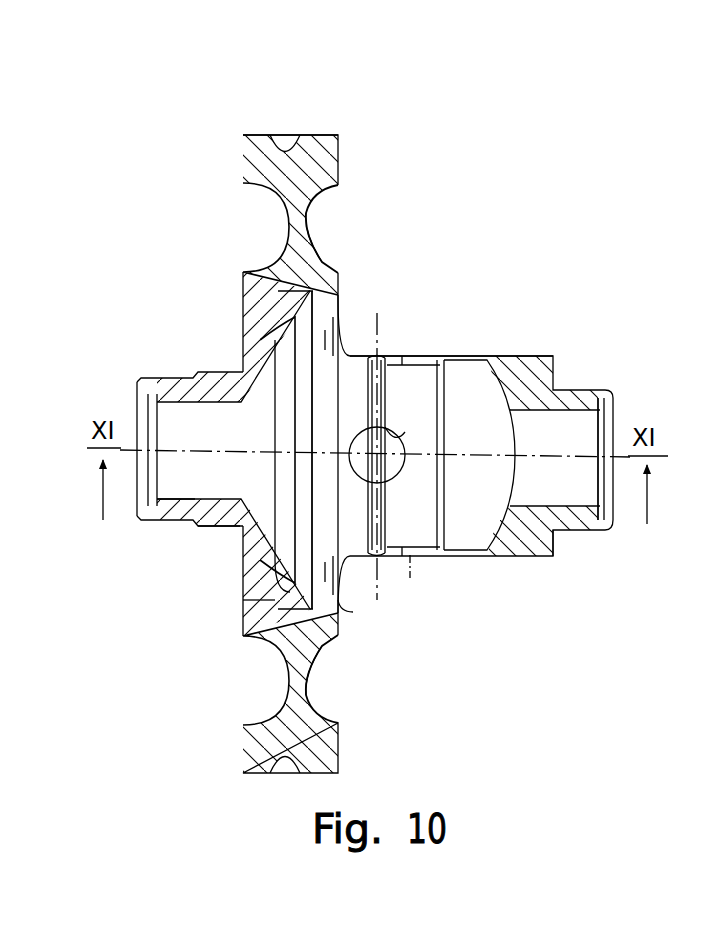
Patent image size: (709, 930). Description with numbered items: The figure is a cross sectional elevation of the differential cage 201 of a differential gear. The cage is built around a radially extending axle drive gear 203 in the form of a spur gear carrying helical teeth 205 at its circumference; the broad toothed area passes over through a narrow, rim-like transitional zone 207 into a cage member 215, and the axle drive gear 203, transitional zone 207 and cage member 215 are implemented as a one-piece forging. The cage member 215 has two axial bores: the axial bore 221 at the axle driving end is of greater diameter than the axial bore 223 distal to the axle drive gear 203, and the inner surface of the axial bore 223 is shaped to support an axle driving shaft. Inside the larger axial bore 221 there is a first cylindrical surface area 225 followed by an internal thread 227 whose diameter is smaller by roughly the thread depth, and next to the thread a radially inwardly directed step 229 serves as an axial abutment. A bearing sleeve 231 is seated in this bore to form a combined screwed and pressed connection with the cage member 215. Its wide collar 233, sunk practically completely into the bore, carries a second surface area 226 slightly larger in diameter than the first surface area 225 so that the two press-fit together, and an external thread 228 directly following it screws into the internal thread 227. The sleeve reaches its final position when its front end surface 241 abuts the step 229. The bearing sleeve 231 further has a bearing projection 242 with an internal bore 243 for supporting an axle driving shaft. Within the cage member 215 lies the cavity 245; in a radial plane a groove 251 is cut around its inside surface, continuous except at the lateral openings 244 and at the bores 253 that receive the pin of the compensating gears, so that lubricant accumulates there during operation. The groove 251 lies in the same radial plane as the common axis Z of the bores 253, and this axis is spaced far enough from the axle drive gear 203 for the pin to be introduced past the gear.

The differential cage 201 is at (440, 258).
The axle drive gear 203 is at (243, 212).
The helical teeth 205 is at (296, 137).
The transitional zone 207 is at (297, 222).
The cage member 215 is at (523, 373).
The axial bore 221 is at (243, 307).
The axial bore 223 is at (582, 418).
The first cylindrical surface area 225 is at (245, 600).
The second surface area 226 is at (248, 640).
The internal thread 227 is at (353, 612).
The external thread 228 is at (250, 690).
The step 229 is at (316, 292).
The bearing sleeve 231 is at (180, 376).
The collar 233 is at (268, 592).
The front end surface 241 is at (268, 334).
The bearing projection 242 is at (210, 512).
The internal bore 243 is at (193, 497).
The lateral openings 244 is at (483, 557).
The cavity 245 is at (437, 553).
The groove 251 is at (380, 345).
The bores 253 is at (384, 427).
The axis Z is at (406, 582).